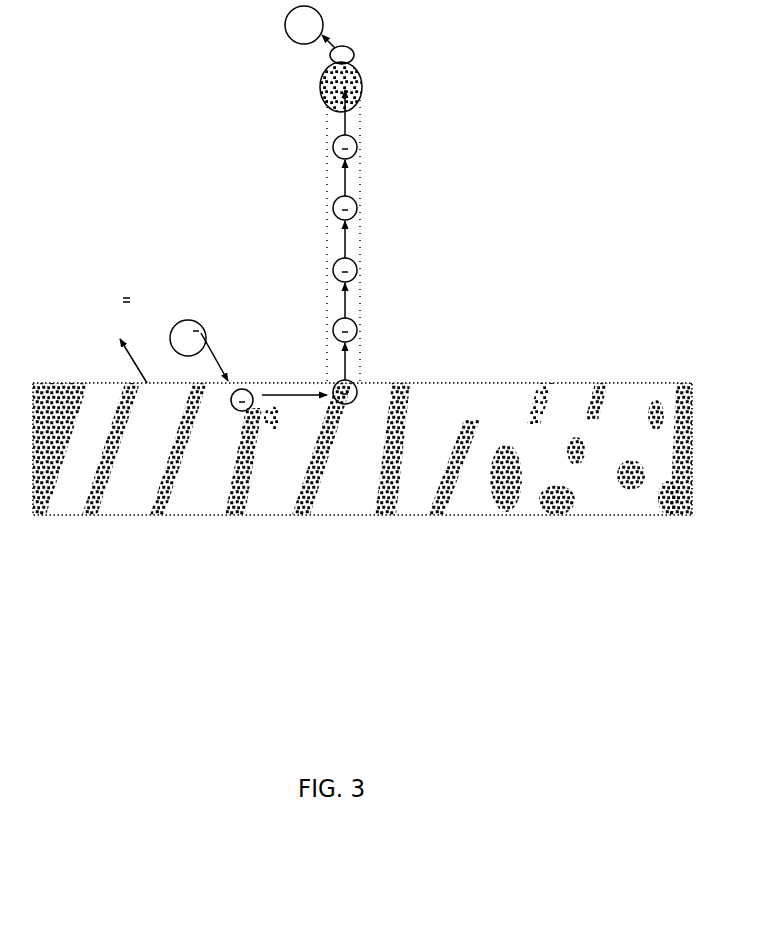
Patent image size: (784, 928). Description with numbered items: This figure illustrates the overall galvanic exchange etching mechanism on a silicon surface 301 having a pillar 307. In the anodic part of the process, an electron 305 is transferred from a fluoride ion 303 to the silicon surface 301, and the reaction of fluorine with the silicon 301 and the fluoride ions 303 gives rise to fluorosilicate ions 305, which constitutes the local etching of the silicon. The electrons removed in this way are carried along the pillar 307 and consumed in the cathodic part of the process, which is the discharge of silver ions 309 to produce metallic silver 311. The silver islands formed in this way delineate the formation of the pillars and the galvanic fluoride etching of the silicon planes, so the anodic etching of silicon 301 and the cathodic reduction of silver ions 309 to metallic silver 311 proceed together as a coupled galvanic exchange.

The silicon surface 301 is at (647, 426).
The fluoride ion 303 is at (188, 318).
The electron 305 is at (102, 293).
The pillar 307 is at (327, 233).
The silver ions 309 is at (285, 21).
The metallic silver 311 is at (363, 75).